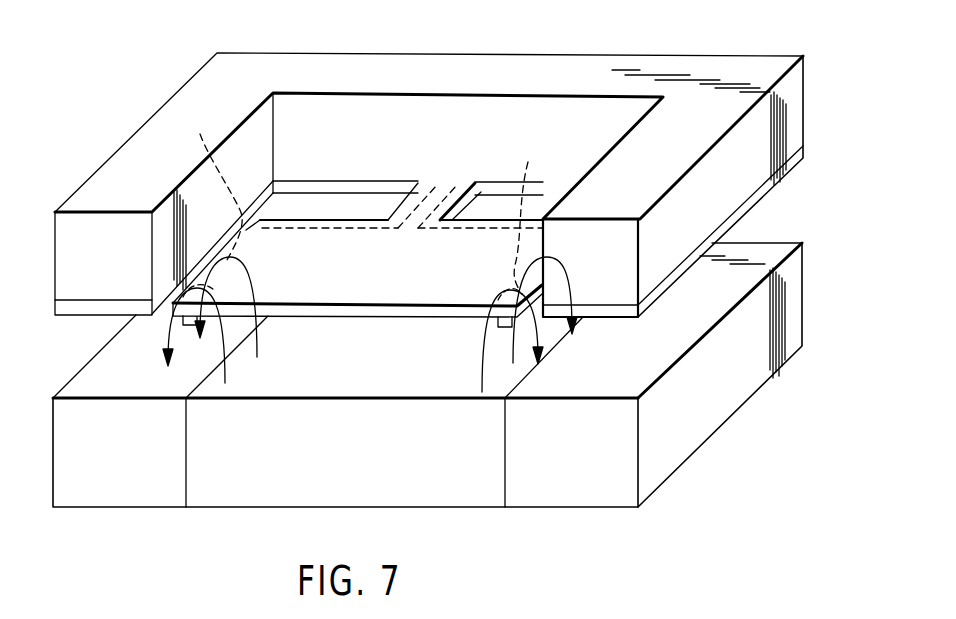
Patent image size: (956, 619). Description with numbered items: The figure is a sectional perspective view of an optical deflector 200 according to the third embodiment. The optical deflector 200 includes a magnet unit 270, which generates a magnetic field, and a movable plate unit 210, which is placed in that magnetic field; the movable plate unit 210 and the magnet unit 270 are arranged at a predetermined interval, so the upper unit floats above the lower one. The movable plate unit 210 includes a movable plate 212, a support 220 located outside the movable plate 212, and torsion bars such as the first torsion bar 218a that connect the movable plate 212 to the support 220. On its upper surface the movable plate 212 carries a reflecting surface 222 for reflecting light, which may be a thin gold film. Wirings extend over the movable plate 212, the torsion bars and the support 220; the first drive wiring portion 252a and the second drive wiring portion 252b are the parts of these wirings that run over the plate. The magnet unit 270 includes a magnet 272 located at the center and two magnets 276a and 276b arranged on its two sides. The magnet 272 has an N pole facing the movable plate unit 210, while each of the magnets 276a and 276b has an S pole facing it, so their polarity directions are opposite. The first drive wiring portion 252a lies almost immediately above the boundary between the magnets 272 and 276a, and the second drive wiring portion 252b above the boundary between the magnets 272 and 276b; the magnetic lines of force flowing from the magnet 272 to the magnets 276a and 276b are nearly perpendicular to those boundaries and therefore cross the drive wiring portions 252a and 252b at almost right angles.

The optical deflector 200 is at (128, 92).
The movable plate unit 210 is at (817, 134).
The support 220 is at (345, 62).
The reflecting surface 222 is at (313, 248).
The first torsion bar 218a is at (410, 196).
The movable plate 212 is at (480, 210).
The first drive wiring portion 252a is at (528, 218).
The second drive wiring portion 252b is at (208, 203).
The magnet unit 270 is at (817, 294).
The magnet 272 is at (453, 508).
The magnet 276a is at (718, 392).
The magnet 276b is at (96, 376).